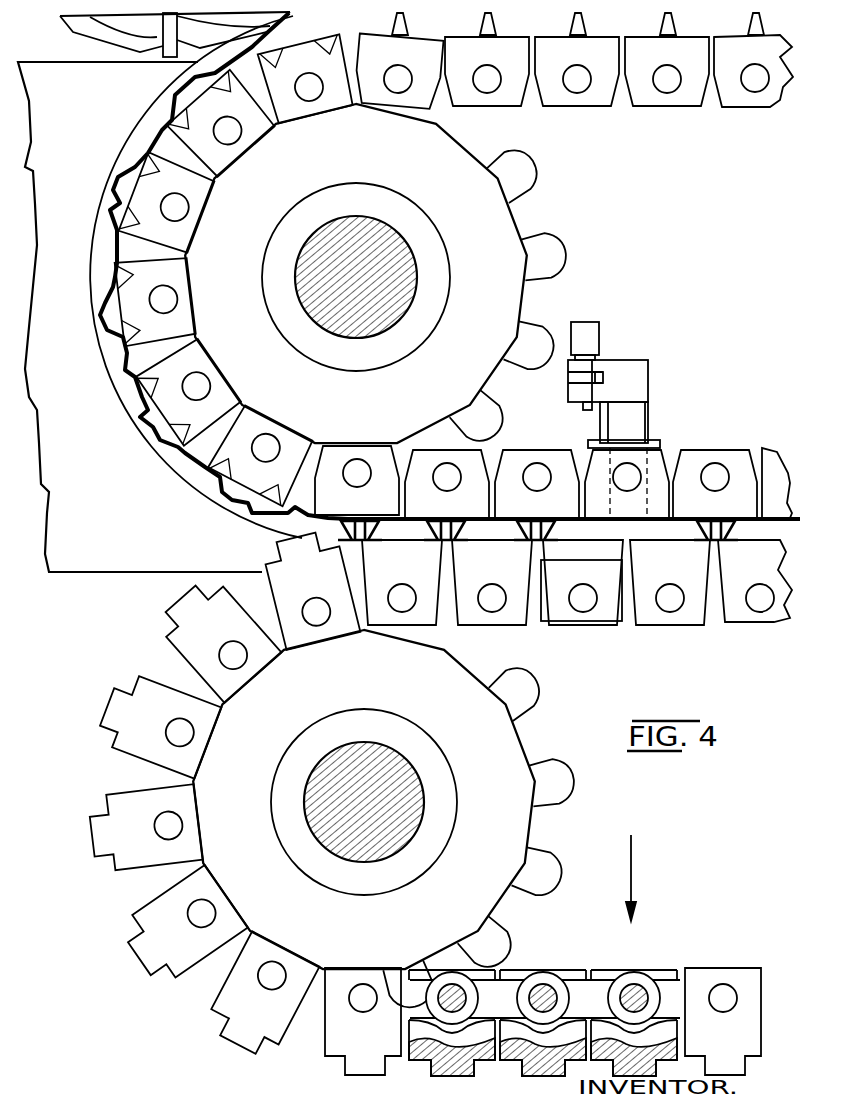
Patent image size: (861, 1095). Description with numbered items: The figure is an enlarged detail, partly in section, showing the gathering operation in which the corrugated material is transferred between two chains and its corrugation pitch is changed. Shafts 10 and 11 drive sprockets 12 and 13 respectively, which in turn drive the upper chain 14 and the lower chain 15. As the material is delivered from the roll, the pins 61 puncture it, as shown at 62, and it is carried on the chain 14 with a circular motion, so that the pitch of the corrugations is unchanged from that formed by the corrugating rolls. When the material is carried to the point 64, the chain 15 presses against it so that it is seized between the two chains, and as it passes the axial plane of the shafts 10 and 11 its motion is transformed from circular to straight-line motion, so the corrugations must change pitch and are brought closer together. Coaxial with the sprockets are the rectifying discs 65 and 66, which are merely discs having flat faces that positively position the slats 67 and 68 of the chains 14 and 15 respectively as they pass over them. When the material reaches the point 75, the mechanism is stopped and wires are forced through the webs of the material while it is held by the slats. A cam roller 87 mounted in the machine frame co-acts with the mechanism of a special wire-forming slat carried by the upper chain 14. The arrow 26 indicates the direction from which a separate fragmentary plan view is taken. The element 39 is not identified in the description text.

The shaft 10 is at (395, 275).
The shaft 11 is at (400, 800).
The sprocket 12 is at (523, 170).
The sprocket 13 is at (520, 677).
The chain 14 is at (696, 88).
The chain 15 is at (702, 988).
The arrow 26 is at (630, 869).
The guide plate 39 is at (167, 127).
The pins 61 is at (583, 15).
The puncture 62 is at (447, 541).
The point 64 is at (240, 522).
The rectifying disc 65 is at (356, 273).
The rectifying disc 66 is at (364, 799).
The slats 67 is at (505, 52).
The slats 68 is at (439, 802).
The point 75 is at (573, 528).
The cam roller 87 is at (653, 460).